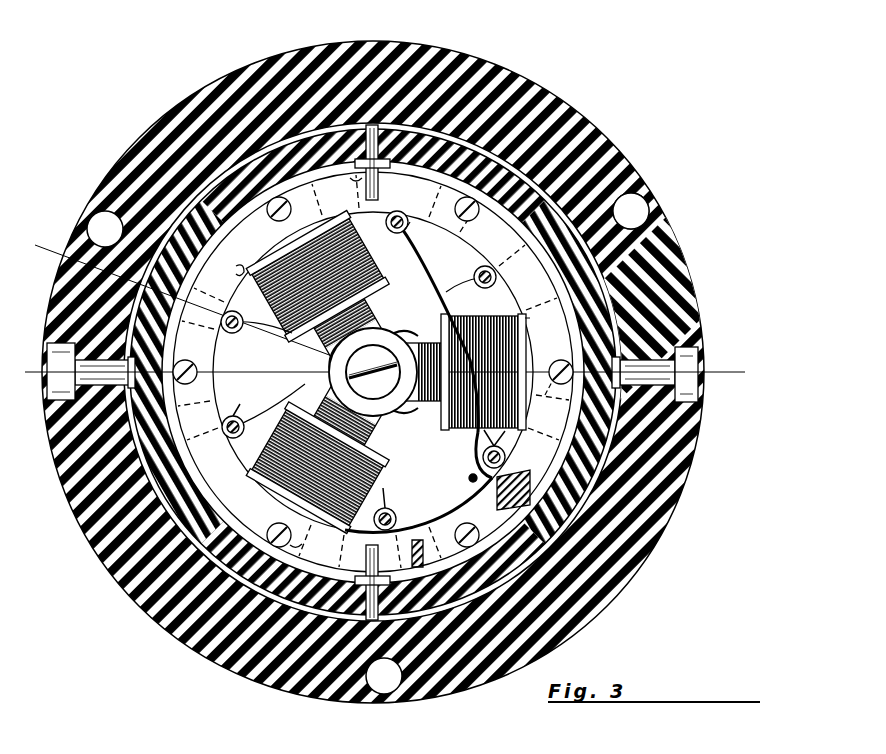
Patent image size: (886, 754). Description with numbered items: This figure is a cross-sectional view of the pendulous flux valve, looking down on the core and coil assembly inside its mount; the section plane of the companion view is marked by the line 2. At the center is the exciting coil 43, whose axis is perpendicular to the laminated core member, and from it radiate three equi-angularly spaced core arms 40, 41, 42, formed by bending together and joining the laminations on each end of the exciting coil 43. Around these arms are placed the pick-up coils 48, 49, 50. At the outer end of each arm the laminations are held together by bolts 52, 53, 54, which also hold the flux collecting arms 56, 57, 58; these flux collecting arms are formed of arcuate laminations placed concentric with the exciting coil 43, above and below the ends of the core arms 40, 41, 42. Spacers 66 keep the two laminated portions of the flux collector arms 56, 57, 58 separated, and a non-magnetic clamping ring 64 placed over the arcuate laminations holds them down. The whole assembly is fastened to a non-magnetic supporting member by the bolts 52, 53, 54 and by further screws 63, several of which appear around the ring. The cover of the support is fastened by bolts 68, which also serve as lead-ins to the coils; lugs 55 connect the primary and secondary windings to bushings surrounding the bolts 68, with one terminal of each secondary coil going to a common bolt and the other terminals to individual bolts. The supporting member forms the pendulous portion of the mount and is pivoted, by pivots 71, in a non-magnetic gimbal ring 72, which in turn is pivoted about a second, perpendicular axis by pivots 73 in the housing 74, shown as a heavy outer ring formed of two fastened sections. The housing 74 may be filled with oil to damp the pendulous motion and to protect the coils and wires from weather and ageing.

The section line 2- 2 is at (38, 240).
The core arm 40 is at (330, 362).
The core arm 41 is at (372, 428).
The core arm 42 is at (418, 338).
The exciting coil 43 is at (412, 412).
The pick-up coil 48 is at (264, 286).
The pick-up coil 49 is at (283, 445).
The pick-up coil 50 is at (490, 318).
The bolt 52 is at (356, 180).
The bolt 53 is at (295, 548).
The bolt 54 is at (552, 392).
The lug 55 is at (446, 290).
The flux collecting arm 56 is at (236, 270).
The flux collecting arm 57 is at (254, 478).
The flux collecting arm 58 is at (522, 322).
The screw 63 is at (463, 222).
The clamping ring 64 is at (406, 228).
The spacer 66 is at (480, 270).
The bolt 68 is at (397, 211).
The pivot 71 is at (422, 228).
The gimbal ring 72 is at (652, 218).
The pivot 73 is at (58, 392).
The housing 74 is at (668, 548).